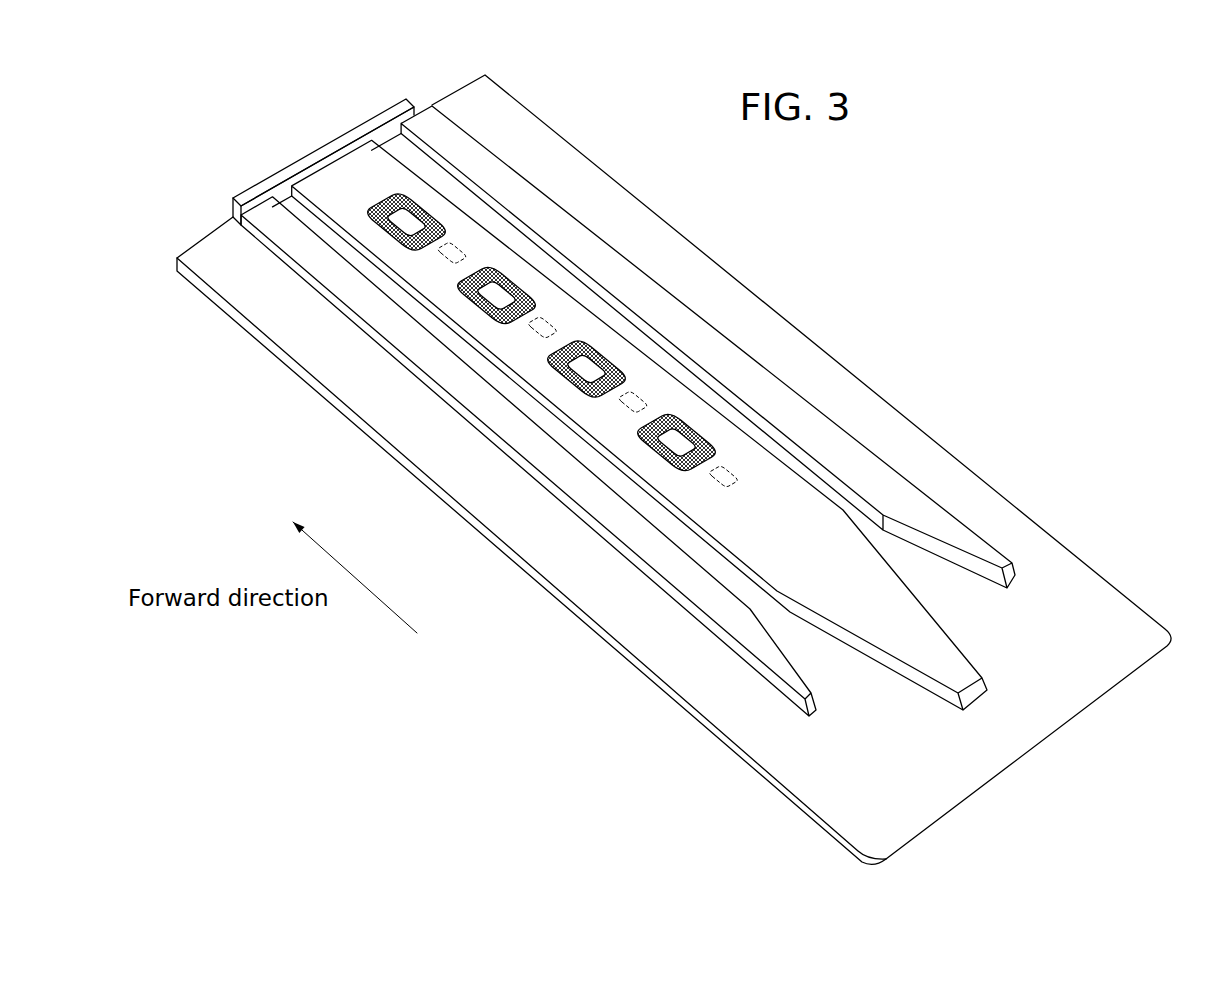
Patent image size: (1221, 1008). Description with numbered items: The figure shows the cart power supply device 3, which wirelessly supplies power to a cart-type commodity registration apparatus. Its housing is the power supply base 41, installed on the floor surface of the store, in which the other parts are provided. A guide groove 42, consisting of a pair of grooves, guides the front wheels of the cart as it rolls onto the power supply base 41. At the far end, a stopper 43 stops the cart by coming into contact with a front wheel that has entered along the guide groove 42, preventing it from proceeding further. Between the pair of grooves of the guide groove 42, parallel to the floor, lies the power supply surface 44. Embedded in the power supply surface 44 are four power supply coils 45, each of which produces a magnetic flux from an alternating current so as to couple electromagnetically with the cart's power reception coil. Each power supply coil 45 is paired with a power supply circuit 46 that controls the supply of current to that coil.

The cart power supply device 3 is at (867, 240).
The power supply base 41 is at (303, 335).
The guide groove 42 is at (437, 327).
The stopper 43 is at (282, 180).
The power supply surface 44 is at (340, 165).
The power supply coil 45 is at (432, 200).
The power supply circuit 46 is at (458, 245).